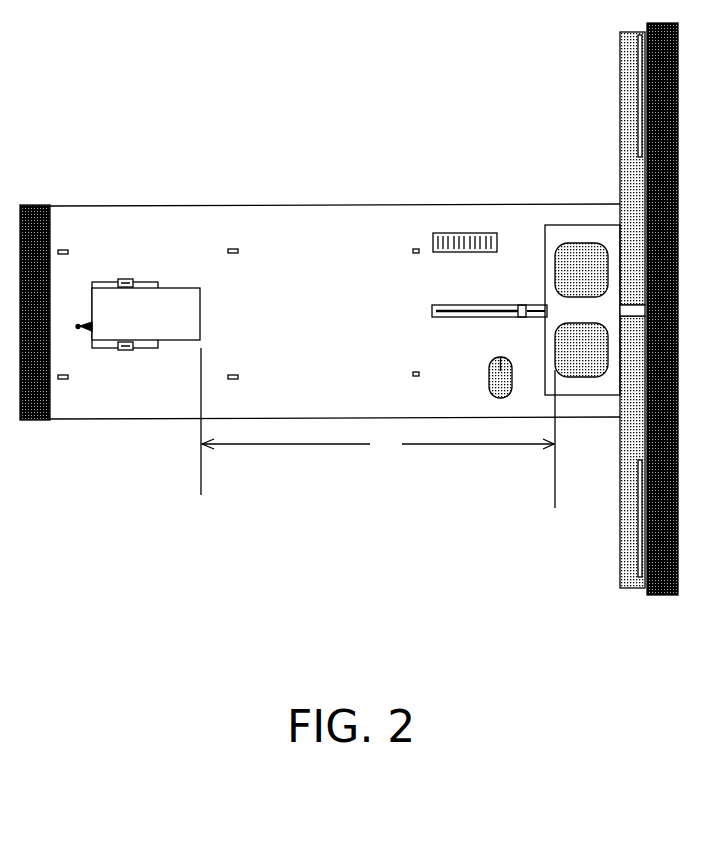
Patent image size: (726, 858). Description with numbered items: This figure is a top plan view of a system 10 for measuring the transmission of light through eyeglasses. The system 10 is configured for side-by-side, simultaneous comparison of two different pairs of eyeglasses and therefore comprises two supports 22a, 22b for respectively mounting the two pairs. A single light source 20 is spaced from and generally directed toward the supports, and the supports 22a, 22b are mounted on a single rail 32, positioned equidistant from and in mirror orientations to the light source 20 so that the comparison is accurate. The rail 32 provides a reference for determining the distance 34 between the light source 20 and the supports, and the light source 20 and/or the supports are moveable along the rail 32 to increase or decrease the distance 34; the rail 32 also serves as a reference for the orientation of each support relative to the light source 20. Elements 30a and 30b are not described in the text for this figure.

The system 10 is at (243, 496).
The light source 20 is at (178, 305).
The support 22a is at (576, 258).
The support 22b is at (580, 356).
The upper wall segment 30a is at (625, 106).
The lower wall segment 30b is at (626, 470).
The rail 32 is at (508, 305).
The distance 34 is at (378, 428).